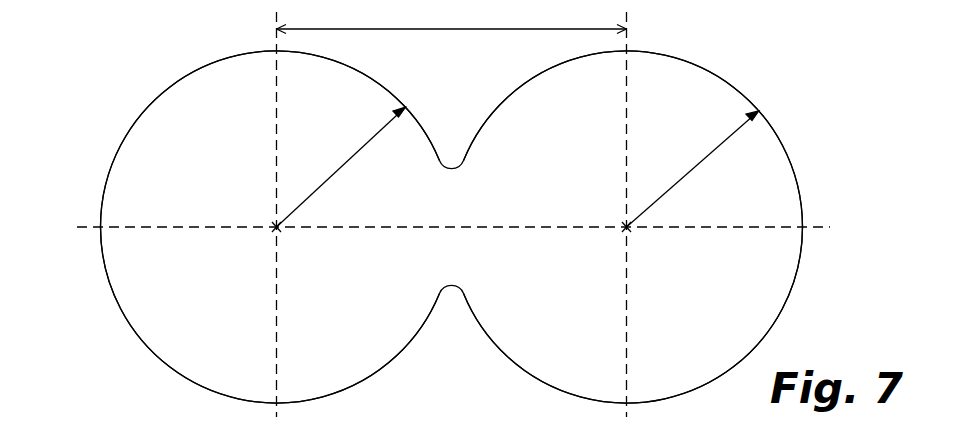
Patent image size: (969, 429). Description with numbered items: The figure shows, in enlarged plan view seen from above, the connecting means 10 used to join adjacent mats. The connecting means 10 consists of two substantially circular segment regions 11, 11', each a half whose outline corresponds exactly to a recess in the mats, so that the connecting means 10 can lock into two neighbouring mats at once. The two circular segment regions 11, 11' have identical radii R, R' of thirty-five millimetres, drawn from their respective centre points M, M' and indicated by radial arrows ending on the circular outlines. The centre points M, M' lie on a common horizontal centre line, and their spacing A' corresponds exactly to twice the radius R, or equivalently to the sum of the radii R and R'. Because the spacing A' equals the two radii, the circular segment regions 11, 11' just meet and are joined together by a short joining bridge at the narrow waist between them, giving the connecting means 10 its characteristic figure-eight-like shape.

The connecting means 10 is at (513, 368).
The circular segment region 11 is at (269, 227).
The circular segment region 11' is at (633, 227).
The radius R is at (341, 167).
The radius R' is at (693, 169).
The centre point M is at (258, 248).
The centre point M' is at (656, 248).
The spacing A' is at (452, 20).